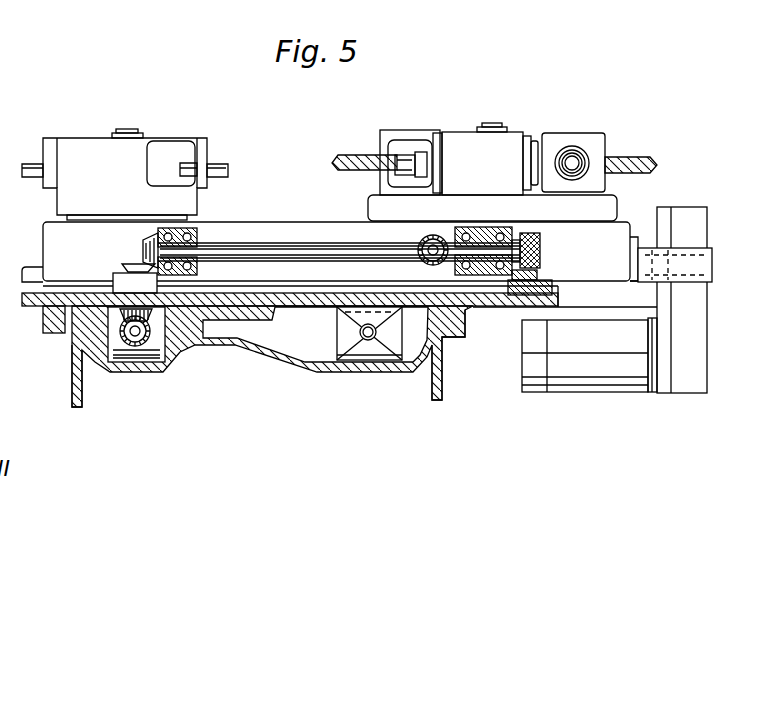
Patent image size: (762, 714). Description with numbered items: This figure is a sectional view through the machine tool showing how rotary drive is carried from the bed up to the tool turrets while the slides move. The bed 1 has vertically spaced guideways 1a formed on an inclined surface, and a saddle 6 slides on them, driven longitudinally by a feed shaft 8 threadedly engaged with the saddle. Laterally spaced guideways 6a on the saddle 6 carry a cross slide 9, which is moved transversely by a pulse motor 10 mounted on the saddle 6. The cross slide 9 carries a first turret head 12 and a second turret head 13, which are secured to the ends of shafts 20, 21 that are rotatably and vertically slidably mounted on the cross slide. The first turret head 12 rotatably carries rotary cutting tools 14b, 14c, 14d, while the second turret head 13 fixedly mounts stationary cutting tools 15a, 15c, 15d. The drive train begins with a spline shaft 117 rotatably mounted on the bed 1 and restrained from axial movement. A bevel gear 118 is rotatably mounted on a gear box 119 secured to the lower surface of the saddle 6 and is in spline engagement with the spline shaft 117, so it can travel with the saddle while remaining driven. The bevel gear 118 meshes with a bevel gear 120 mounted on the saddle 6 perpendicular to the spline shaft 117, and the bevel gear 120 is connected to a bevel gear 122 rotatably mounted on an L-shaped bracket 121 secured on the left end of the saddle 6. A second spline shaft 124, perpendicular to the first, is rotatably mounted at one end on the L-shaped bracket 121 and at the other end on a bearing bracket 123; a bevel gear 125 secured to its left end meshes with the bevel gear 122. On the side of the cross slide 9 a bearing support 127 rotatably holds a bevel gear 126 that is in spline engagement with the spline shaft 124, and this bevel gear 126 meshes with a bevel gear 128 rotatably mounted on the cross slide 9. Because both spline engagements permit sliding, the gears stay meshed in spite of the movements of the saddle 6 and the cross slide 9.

The bed 1 is at (325, 373).
The guideways 1a is at (218, 345).
The saddle 6 is at (29, 299).
The guideways 6a is at (31, 275).
The feed shaft 8 is at (368, 340).
The cross slide 9 is at (262, 240).
The pulse motor 10 is at (588, 392).
The first turret head 12 is at (452, 142).
The second turret head 13 is at (88, 148).
The rotary cutting tool 14b is at (355, 155).
The rotary cutting tool 14c is at (572, 156).
The rotary cutting tool 14d is at (627, 157).
The stationary cutting tool 15a is at (227, 164).
The stationary cutting tool 15c is at (29, 163).
The stationary cutting tool 15d is at (186, 163).
The shaft 20 is at (491, 123).
The shaft 21 is at (126, 129).
The spline shaft 117 is at (152, 372).
The bevel gear 118 is at (136, 346).
The gear box 119 is at (119, 370).
The bevel gear 120 is at (108, 320).
The L-shaped bracket 121 is at (183, 325).
The bevel gear 122 is at (130, 265).
The bearing bracket 123 is at (527, 270).
The spline shaft 124 is at (312, 243).
The bevel gear 125 is at (150, 240).
The bevel gear 126 is at (437, 266).
The bearing support 127 is at (508, 297).
The bevel gear 128 is at (426, 312).